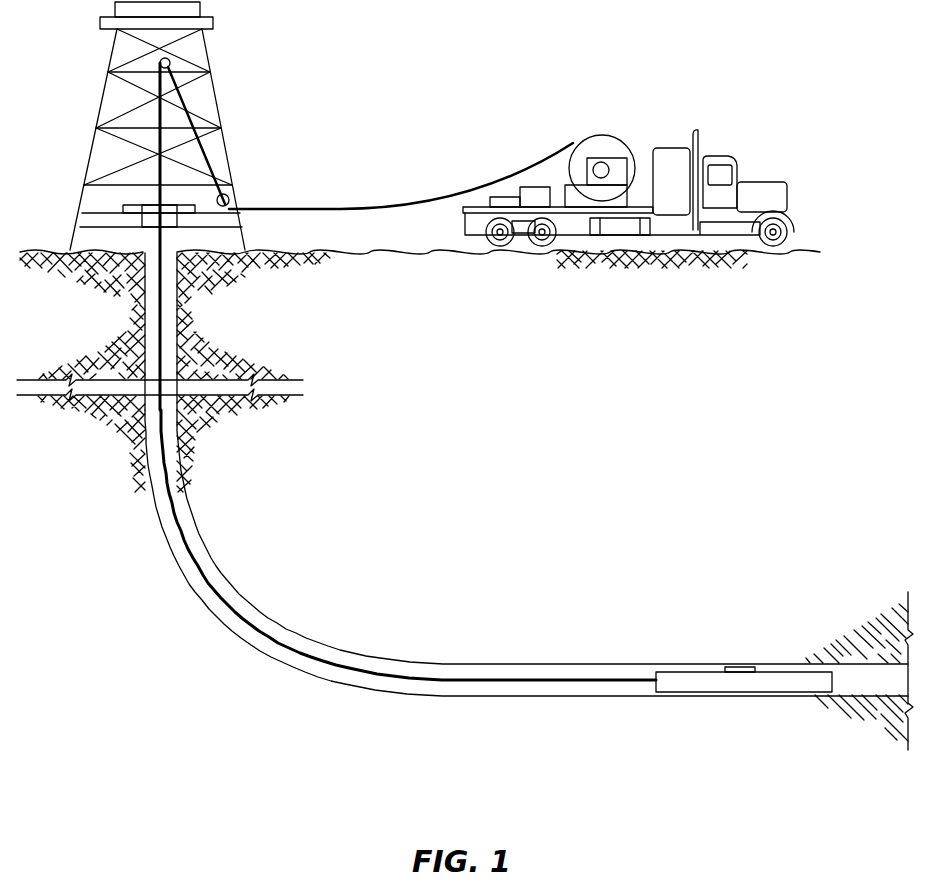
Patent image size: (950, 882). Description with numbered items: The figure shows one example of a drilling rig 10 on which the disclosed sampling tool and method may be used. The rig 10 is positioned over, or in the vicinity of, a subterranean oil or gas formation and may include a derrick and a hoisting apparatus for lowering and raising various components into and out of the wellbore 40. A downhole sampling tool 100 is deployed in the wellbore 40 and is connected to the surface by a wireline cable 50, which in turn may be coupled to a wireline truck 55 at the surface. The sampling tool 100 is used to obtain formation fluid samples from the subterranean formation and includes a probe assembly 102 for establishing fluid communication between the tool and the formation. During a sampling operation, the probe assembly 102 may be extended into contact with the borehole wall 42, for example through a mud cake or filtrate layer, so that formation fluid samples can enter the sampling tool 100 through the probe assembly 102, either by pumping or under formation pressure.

The drilling rig 10 is at (100, 100).
The wellbore 40 is at (509, 474).
The borehole wall 42 is at (180, 558).
The wireline cable 50 is at (348, 207).
The wireline truck 55 is at (660, 115).
The downhole sampling tool 100 is at (777, 668).
The probe assembly 102 is at (737, 667).